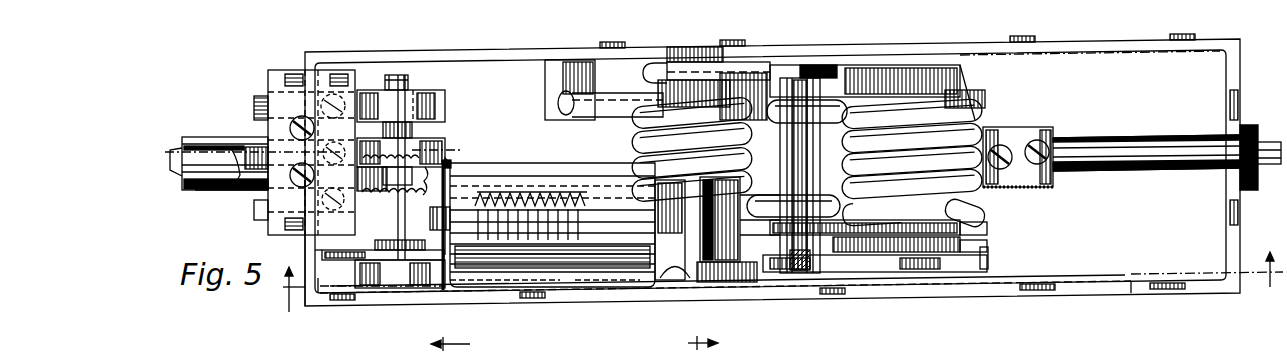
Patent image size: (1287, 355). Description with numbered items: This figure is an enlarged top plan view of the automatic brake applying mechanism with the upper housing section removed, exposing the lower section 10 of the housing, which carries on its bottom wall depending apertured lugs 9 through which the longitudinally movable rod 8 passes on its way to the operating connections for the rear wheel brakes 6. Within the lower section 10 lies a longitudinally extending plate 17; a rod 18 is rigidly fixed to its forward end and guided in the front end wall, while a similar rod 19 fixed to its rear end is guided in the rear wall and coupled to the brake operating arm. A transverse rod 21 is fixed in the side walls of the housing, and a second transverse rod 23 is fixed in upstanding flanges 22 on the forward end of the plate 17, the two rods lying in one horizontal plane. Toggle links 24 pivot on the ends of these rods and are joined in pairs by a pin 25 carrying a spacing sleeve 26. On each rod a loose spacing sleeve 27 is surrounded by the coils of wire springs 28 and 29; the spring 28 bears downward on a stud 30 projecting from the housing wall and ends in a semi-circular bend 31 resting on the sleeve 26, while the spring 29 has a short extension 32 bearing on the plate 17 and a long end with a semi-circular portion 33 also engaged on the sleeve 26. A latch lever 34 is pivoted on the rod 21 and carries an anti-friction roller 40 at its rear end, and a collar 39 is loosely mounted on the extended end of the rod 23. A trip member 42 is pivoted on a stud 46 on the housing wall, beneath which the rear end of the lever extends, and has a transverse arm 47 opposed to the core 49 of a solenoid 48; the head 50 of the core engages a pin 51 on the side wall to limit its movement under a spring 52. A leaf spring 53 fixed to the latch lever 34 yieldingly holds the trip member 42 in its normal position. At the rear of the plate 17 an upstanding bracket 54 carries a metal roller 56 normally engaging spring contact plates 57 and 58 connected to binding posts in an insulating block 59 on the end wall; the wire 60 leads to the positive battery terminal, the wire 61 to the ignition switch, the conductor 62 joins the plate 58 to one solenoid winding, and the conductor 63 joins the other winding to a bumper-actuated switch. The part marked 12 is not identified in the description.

The brakes 6 is at (780, 292).
The longitudinally movable rod 8 is at (1262, 143).
The depending apertured ears or lugs 9 is at (692, 340).
The lower section of housing 10 is at (163, 144).
The cylinder lower wall 12 is at (218, 193).
The longitudinally extending plate 17 is at (590, 160).
The rod 18 is at (1160, 140).
The rod 19 is at (218, 140).
The transverse rod 21 is at (672, 290).
The upstanding flanges 22 is at (885, 75).
The transverse rod 23 is at (920, 282).
The toggle links 24 is at (810, 106).
The pin 25 is at (794, 88).
The spacing sleeve 26 is at (803, 222).
The spacing sleeve 27 is at (648, 72).
The wire spring 28 is at (630, 142).
The wire spring 29 is at (962, 140).
The stud 30 is at (547, 82).
The semi-circular bend 31 is at (783, 268).
The short extension 32 is at (985, 232).
The semi-circular portion 33 is at (812, 95).
The latch lever 34 is at (785, 265).
The collar 39 is at (987, 250).
The anti-friction roller 40 is at (382, 269).
The trip member 42 is at (312, 270).
The stud or projection 46 is at (372, 250).
The transversely positioned arm 47 is at (404, 224).
The solenoid 48 is at (549, 257).
The core 49 is at (565, 205).
The head or flange 50 is at (720, 150).
The pin 51 is at (750, 282).
The spring 52 is at (636, 346).
The leaf spring 53 is at (447, 230).
The upstanding bracket 54 is at (397, 75).
The metal roller 56 is at (385, 130).
The spring contact plate 57 is at (432, 100).
The spring contact plate 58 is at (430, 138).
The insulating block 59 is at (290, 74).
The conductor wire 60 is at (262, 98).
The conductor wire 61 is at (258, 145).
The conductor 62 is at (468, 165).
The conductor wire 63 is at (266, 212).